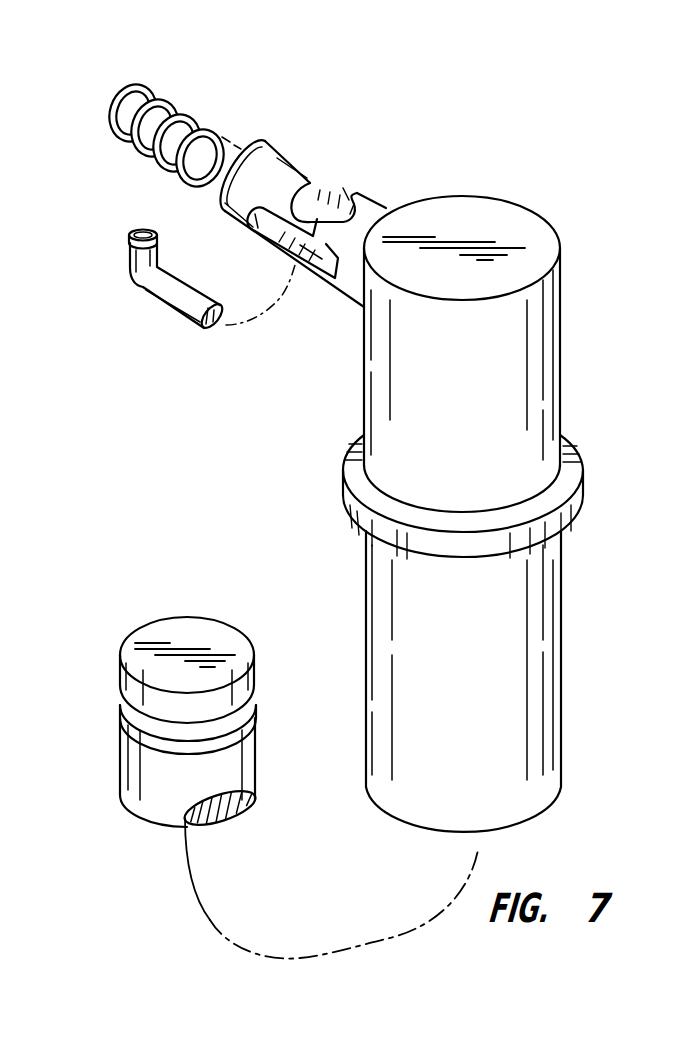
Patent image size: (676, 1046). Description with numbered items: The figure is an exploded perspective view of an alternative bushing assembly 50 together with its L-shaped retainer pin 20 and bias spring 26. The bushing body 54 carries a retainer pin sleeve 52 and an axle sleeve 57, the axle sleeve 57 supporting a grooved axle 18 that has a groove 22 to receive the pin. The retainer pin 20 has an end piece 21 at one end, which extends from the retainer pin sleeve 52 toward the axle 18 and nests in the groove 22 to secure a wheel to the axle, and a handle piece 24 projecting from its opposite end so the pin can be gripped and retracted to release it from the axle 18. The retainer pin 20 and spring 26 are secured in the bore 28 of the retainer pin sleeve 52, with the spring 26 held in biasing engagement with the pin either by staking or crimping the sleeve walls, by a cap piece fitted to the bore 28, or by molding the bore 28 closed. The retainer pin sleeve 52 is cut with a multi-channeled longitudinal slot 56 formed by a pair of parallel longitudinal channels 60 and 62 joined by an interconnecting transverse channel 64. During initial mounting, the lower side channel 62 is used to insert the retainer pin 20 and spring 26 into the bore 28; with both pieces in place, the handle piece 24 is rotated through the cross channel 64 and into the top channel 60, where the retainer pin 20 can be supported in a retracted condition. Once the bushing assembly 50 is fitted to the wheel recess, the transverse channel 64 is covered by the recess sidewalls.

The axle 18 is at (258, 757).
The retainer pin 20 is at (128, 252).
The end piece 21 is at (212, 330).
The groove 22 is at (247, 710).
The handle piece 24 is at (131, 234).
The spring 26 is at (140, 86).
The bore 28 is at (318, 205).
The bushing assembly 50 is at (578, 300).
The retainer pin sleeve 52 is at (262, 140).
The bushing body 54 is at (538, 212).
The multi-channeled longitudinal slot 56 is at (350, 195).
The axle sleeve 57 is at (565, 576).
The top channel 60 is at (356, 214).
The lower side channel 62 is at (307, 215).
The transverse channel 64 is at (267, 253).